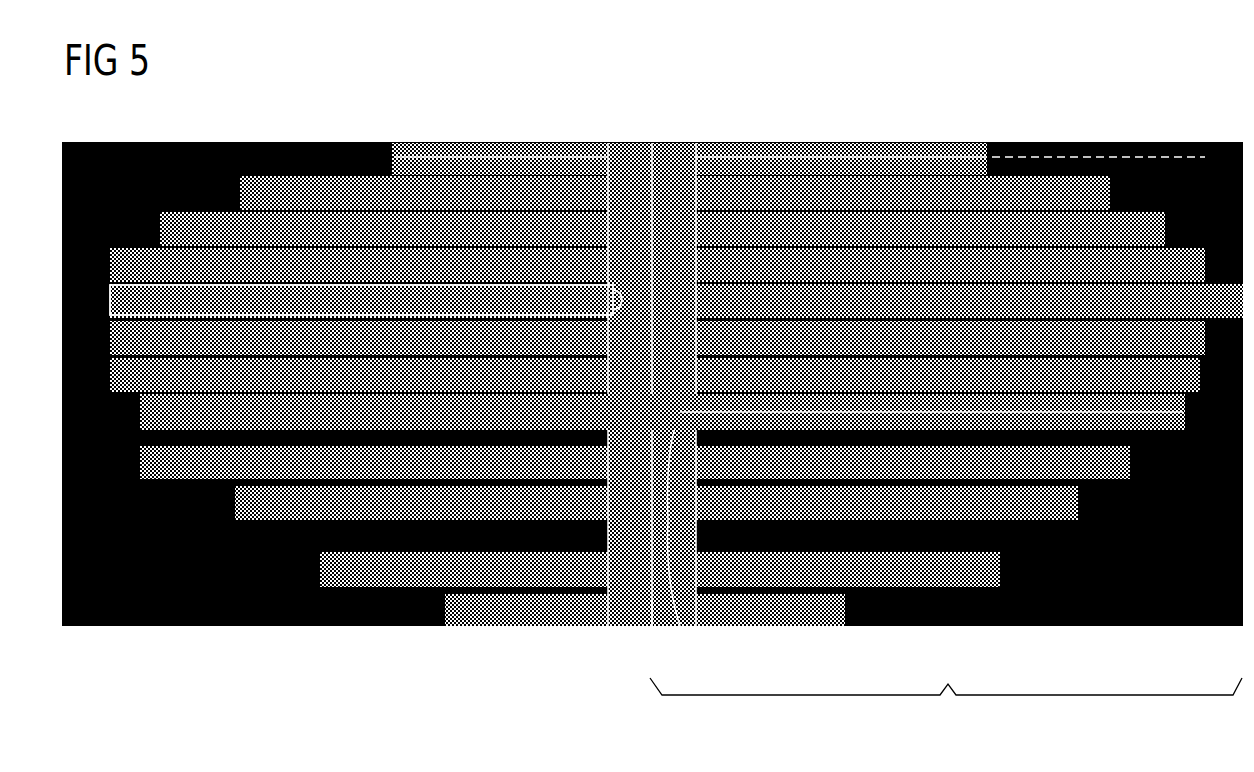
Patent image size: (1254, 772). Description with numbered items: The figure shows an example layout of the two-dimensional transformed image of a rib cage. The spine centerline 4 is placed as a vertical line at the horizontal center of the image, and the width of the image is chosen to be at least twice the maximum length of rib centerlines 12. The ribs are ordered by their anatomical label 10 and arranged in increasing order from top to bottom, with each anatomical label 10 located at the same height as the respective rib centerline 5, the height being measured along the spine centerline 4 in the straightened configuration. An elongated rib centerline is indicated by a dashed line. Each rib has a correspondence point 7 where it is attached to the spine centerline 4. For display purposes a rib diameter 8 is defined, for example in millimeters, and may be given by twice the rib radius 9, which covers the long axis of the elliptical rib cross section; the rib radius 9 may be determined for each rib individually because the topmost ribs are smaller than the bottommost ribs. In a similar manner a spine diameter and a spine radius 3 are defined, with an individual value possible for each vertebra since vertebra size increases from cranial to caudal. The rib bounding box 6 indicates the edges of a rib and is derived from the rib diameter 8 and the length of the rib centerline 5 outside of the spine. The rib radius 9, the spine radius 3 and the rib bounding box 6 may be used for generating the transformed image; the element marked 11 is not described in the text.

The spine radius 3 is at (696, 140).
The spine centerline 4 is at (636, 190).
The rib centerline 5 is at (766, 416).
The rib bounding box 6 is at (520, 282).
The correspondence point 7 is at (648, 190).
The rib diameter 8 is at (630, 300).
The rib radius 9 is at (681, 626).
The anatomical label 10 is at (80, 632).
The column bottom boundary 11 is at (652, 627).
The maximum length of rib centerlines 12 is at (946, 712).